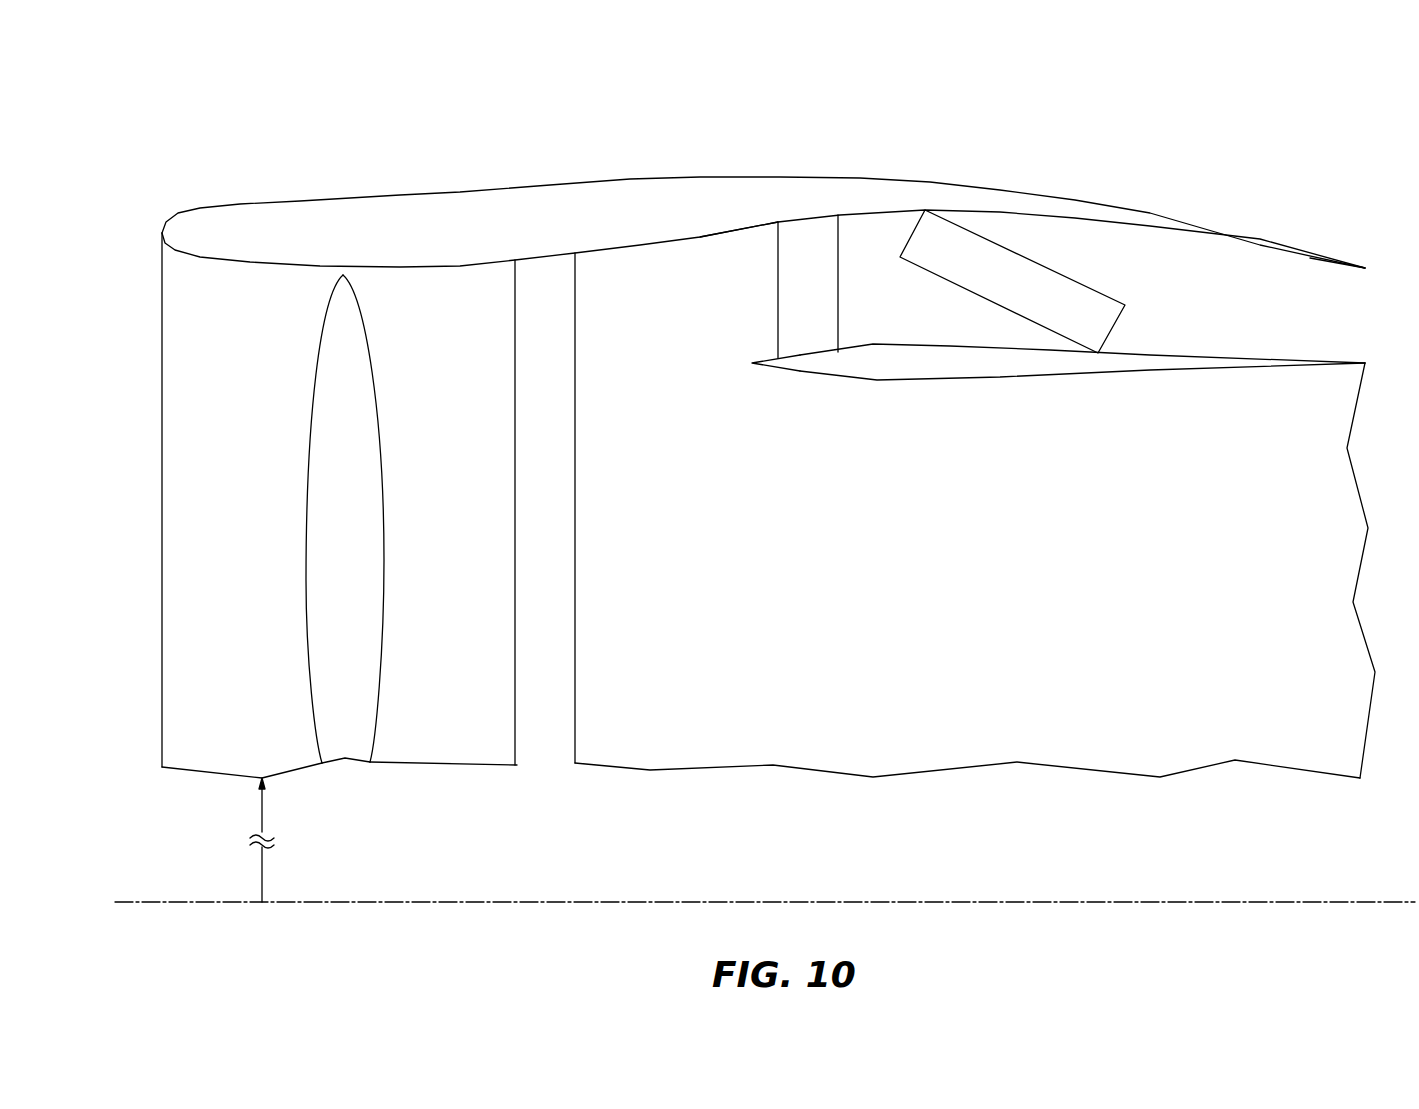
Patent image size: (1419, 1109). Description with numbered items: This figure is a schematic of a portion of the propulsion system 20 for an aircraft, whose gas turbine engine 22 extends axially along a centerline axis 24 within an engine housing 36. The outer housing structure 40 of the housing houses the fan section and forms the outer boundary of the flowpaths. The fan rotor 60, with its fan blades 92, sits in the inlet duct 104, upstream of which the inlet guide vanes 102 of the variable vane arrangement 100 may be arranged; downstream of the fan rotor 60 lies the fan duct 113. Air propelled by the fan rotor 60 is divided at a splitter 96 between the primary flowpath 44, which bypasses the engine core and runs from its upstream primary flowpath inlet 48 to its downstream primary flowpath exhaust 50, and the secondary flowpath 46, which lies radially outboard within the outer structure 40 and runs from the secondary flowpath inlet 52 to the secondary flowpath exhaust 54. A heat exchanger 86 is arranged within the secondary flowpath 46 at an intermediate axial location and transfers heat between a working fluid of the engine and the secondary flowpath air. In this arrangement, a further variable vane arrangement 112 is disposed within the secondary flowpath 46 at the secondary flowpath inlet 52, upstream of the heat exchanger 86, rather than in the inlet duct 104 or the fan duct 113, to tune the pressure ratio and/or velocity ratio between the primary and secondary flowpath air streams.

The propulsion system 20 is at (754, 415).
The gas turbine engine 22 is at (790, 421).
The centerline axis 24 is at (148, 903).
The engine housing 36 is at (763, 173).
The outer housing structure 40 is at (694, 172).
The primary flowpath 44 is at (902, 597).
The secondary flowpath 46 is at (901, 323).
The primary flowpath inlet 48 is at (737, 494).
The primary flowpath exhaust 50 is at (1360, 400).
The secondary flowpath inlet 52 is at (749, 335).
The secondary flowpath exhaust 54 is at (1355, 313).
The fan rotor 60 is at (246, 519).
The heat exchanger 86 is at (1024, 295).
The fan blade 92 is at (305, 608).
The splitter 96 is at (773, 368).
The variable vane arrangement 100 is at (548, 248).
The inlet guide vane 102 is at (575, 722).
The inlet duct 104 is at (235, 470).
The variable vane arrangement 112 is at (820, 365).
The fan duct 113 is at (440, 720).